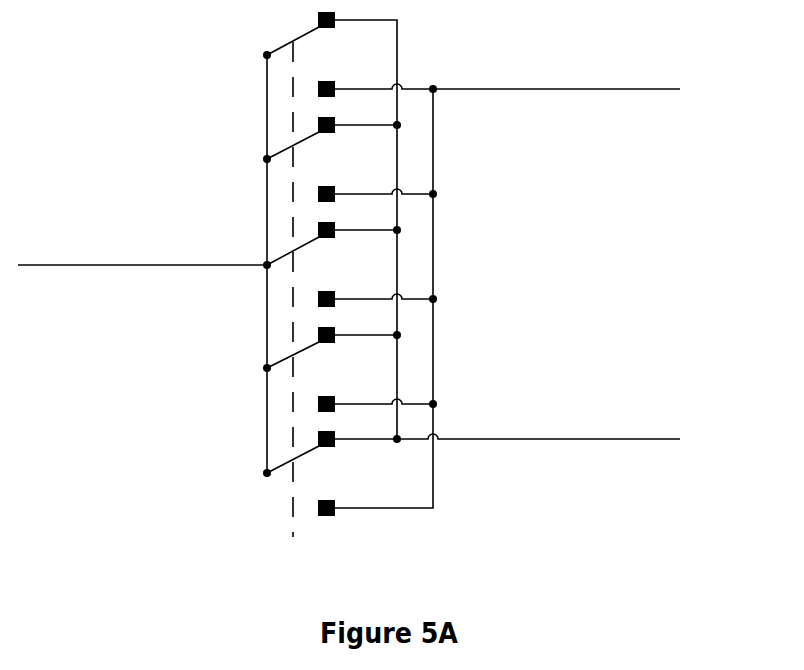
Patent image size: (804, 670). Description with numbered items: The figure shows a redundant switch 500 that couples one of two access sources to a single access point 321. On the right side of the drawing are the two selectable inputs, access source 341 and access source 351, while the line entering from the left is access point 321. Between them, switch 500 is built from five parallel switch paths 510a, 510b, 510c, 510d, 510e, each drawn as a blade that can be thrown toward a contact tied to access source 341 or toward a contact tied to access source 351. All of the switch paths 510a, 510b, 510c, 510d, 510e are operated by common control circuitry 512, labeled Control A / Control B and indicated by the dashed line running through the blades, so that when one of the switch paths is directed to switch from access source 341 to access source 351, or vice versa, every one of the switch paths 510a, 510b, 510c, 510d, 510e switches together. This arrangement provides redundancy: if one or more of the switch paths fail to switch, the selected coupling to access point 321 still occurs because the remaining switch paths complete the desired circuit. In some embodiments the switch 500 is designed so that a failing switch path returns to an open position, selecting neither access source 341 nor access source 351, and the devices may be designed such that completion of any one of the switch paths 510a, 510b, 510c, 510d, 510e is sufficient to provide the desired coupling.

The switch 500 is at (393, 287).
The switch path 510a is at (282, 47).
The switch path 510b is at (282, 150).
The switch path 510c is at (283, 254).
The switch path 510d is at (282, 359).
The switch path 510e is at (282, 463).
The access point 321 is at (55, 228).
The access source 341 is at (583, 65).
The access source 351 is at (583, 415).
The common control circuitry 512 is at (460, 533).